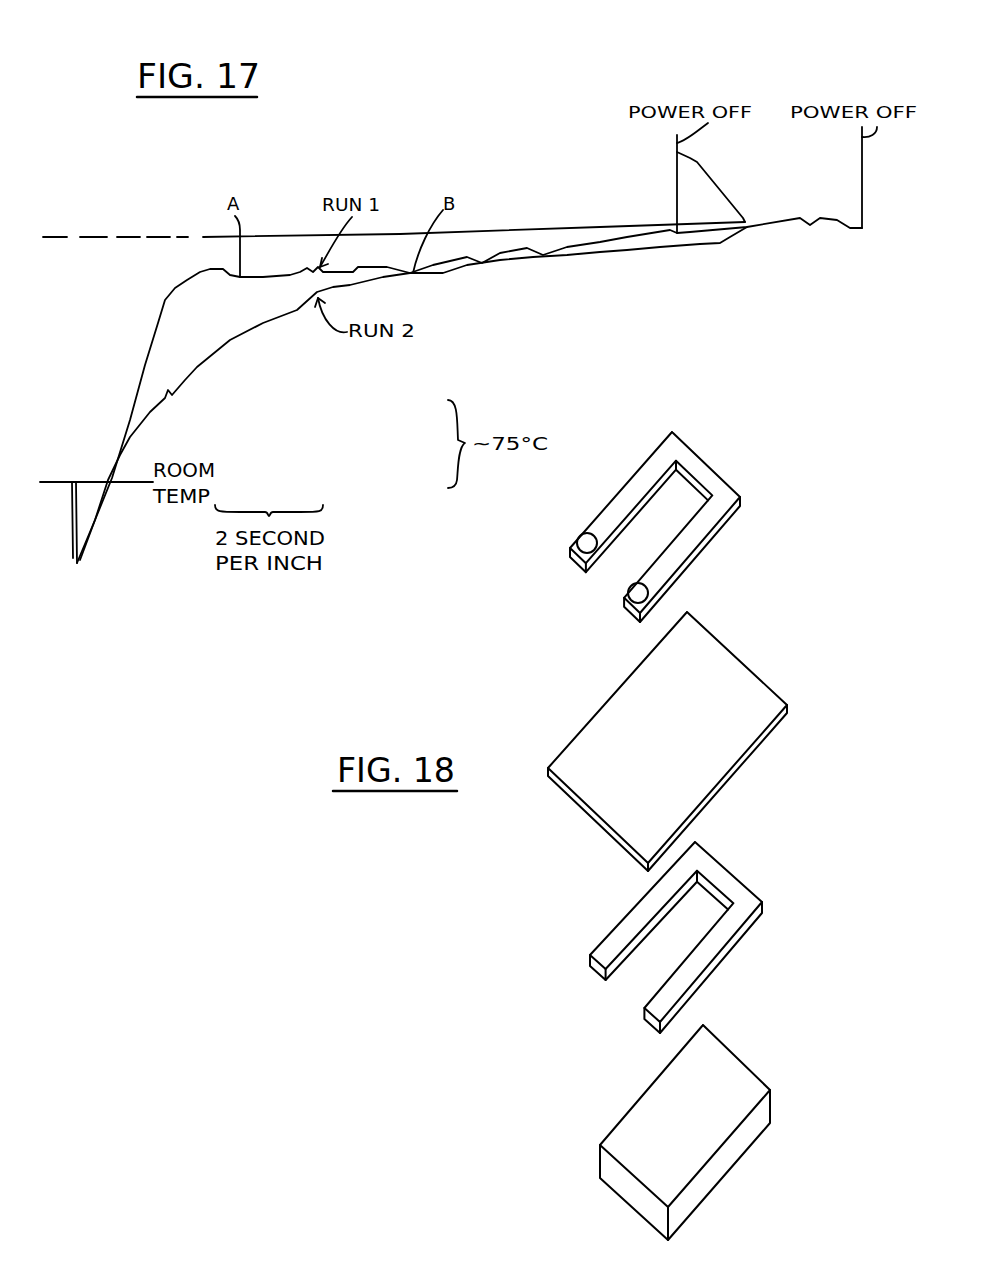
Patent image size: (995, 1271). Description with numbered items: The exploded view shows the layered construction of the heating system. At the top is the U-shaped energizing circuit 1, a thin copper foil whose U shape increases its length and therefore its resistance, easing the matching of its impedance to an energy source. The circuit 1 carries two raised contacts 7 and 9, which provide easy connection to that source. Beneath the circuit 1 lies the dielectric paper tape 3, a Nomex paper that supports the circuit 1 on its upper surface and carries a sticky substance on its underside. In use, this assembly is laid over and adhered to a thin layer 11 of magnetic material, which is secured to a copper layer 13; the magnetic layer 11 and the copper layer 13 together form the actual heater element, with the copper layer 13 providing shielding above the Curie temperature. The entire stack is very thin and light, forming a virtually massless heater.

The energizing circuit 1 is at (713, 470).
The dielectric paper tape 3 is at (731, 653).
The raised contact 7 is at (583, 535).
The raised contact 9 is at (624, 601).
The thin layer of magnetic material 11 is at (728, 872).
The copper layer 13 is at (732, 1053).